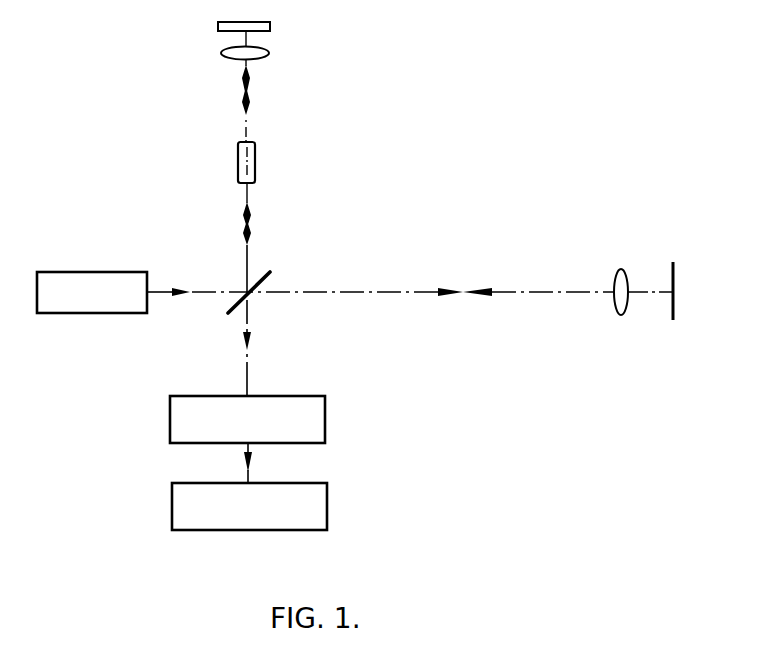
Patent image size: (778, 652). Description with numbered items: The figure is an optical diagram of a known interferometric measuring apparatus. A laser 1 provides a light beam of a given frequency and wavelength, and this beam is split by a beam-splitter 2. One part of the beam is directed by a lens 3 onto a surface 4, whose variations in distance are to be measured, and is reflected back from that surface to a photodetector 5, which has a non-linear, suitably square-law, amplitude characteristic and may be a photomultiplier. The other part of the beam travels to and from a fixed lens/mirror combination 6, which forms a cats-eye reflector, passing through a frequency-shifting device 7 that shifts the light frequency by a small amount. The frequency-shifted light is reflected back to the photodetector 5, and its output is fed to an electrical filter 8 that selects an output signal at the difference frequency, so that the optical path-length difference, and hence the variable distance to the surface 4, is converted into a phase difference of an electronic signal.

The laser 1 is at (92, 272).
The beam-splitter 2 is at (270, 272).
The lens 3 is at (615, 273).
The surface 4 is at (670, 262).
The photodetector 5 is at (325, 406).
The lens/mirror combination 6 is at (260, 42).
The frequency-shifting device 7 is at (238, 160).
The electrical filter 8 is at (327, 495).